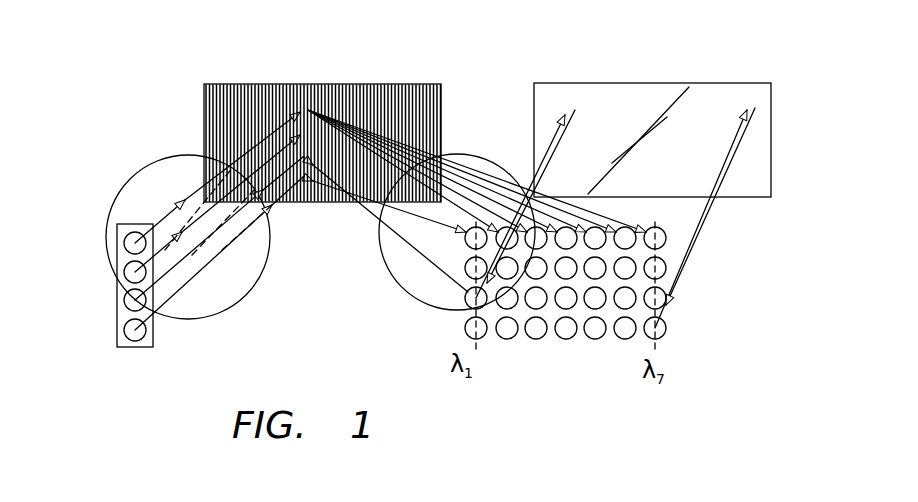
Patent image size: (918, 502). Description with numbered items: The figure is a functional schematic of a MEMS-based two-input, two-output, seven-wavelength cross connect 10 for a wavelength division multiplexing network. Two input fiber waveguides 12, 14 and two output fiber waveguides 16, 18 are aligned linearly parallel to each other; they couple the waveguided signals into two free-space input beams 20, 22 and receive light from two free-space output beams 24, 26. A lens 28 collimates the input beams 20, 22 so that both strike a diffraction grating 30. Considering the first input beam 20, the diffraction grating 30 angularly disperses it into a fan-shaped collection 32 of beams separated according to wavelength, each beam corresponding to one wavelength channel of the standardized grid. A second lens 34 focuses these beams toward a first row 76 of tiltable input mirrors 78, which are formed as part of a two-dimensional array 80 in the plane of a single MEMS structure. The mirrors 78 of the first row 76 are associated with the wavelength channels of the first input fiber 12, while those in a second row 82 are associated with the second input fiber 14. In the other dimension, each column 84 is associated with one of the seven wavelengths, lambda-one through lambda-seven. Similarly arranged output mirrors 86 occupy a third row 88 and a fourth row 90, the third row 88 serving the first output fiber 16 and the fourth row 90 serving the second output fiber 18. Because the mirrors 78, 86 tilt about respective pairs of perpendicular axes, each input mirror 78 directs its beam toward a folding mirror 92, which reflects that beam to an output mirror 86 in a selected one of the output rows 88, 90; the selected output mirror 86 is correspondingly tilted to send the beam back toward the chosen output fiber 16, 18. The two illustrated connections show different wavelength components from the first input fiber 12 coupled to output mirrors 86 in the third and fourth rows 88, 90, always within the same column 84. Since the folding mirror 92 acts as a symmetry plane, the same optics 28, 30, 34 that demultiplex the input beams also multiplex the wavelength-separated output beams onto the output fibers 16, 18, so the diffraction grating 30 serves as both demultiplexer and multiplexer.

The wavelength cross connect 10 is at (108, 152).
The first input fiber waveguide 12 is at (124, 239).
The second input fiber waveguide 14 is at (124, 268).
The first output fiber waveguide 16 is at (124, 296).
The second output fiber waveguide 18 is at (124, 326).
The first free-space input beam 20 is at (160, 222).
The second free-space input beam 22 is at (183, 248).
The first free-space output beam 24 is at (183, 276).
The second free-space output beam 26 is at (182, 297).
The lens 28 is at (160, 180).
The diffraction grating 30 is at (247, 84).
The fan-shaped collection of beams 32 is at (378, 132).
The lens 34 is at (490, 165).
The first row of input mirrors 76 is at (678, 239).
The tiltable input mirrors 78 is at (568, 280).
The two-dimensional mirror array 80 is at (675, 350).
The second row of input mirrors 82 is at (678, 269).
The column of mirrors 84 is at (483, 358).
The output mirrors 86 is at (599, 332).
The third row of output mirrors 88 is at (678, 298).
The fourth row of output mirrors 90 is at (678, 328).
The folding mirror 92 is at (590, 83).